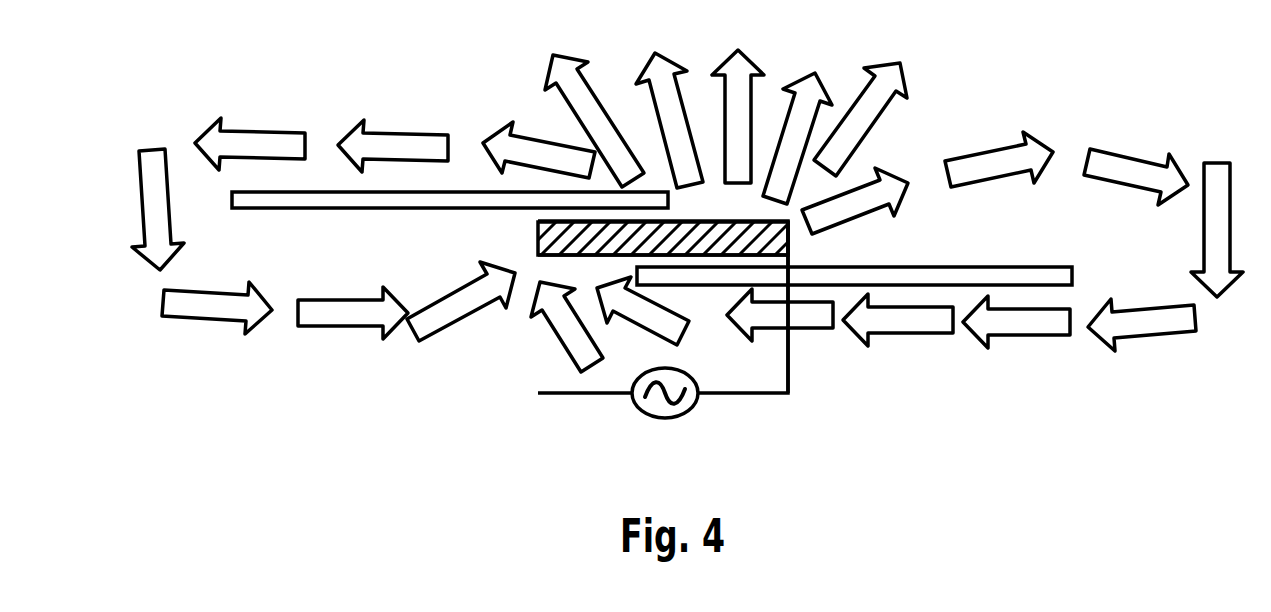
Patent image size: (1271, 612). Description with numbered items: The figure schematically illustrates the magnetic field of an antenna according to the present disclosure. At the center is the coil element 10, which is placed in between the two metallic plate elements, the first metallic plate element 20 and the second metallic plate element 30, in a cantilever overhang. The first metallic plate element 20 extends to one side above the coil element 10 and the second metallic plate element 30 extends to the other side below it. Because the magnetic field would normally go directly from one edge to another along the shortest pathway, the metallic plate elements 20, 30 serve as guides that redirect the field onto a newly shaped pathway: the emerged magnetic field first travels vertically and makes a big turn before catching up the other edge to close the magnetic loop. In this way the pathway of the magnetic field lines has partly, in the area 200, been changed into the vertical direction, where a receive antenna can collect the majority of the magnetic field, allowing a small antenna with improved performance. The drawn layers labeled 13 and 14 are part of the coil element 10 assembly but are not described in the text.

The coil element 10 is at (667, 319).
The dielectric layer 13 is at (538, 237).
The electrode 14 is at (788, 243).
The first metallic plate element 20 is at (305, 210).
The second metallic plate element 30 is at (1013, 267).
The area 200 is at (955, 87).